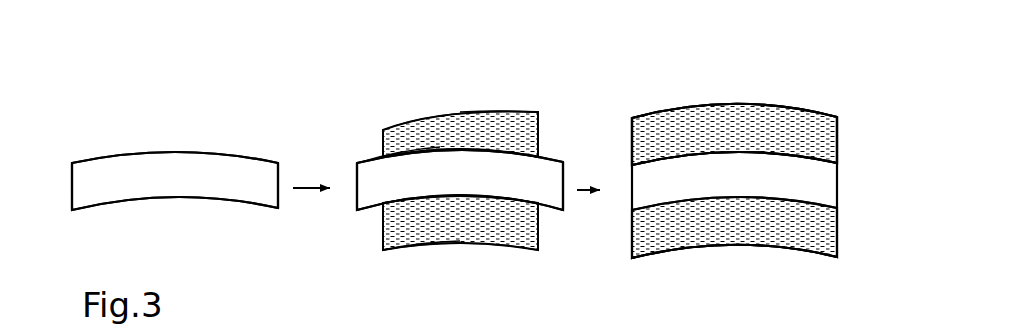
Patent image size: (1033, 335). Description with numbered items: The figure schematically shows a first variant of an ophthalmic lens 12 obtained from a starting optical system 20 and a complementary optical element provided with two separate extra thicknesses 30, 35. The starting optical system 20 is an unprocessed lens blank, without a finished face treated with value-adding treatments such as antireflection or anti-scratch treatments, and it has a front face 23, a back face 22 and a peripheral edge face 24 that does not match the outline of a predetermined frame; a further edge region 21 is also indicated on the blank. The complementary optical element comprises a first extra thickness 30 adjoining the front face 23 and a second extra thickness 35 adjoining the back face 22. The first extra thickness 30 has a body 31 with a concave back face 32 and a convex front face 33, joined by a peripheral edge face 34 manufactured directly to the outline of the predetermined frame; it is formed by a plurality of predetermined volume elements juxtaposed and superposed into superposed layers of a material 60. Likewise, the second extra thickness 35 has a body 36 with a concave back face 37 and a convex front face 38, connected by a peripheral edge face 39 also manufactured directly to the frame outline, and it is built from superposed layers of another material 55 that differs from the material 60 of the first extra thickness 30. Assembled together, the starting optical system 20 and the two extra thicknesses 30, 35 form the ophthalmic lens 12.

The ophthalmic lens 12 is at (823, 80).
The starting optical system 20 is at (308, 122).
The first edge of film 21 is at (76, 182).
The back face 22 is at (181, 200).
The front face 23 is at (170, 150).
The peripheral edge face 24 is at (279, 209).
The first extra thickness 30 is at (516, 106).
The body 31 is at (530, 143).
The back face 32 is at (393, 163).
The front face 33 is at (438, 113).
The peripheral edge face 34 is at (538, 120).
The second extra thickness 35 is at (518, 255).
The body 36 is at (410, 243).
The back face 37 is at (470, 244).
The front face 38 is at (470, 193).
The peripheral edge face 39 is at (538, 231).
The material 55 is at (837, 233).
The material 60 is at (532, 112).